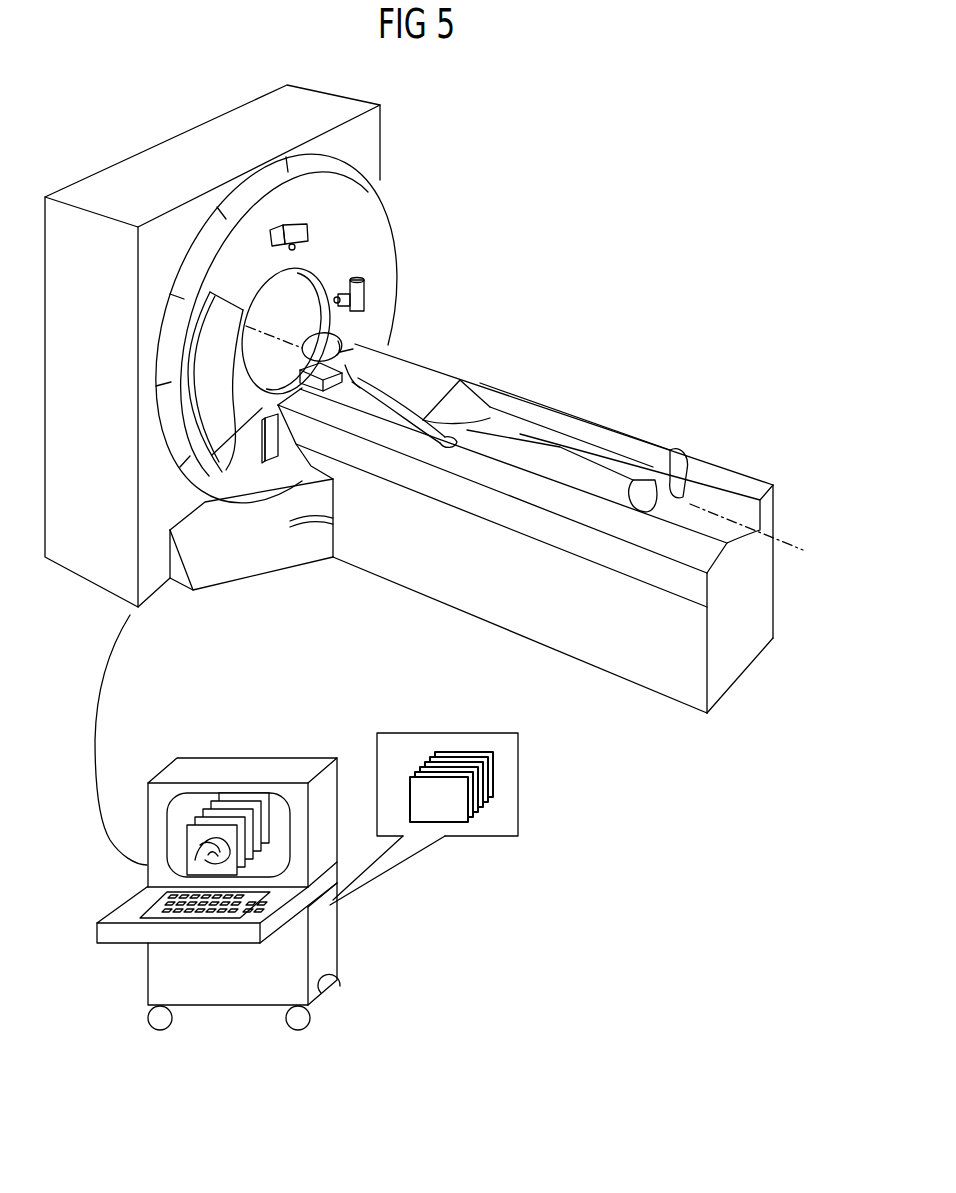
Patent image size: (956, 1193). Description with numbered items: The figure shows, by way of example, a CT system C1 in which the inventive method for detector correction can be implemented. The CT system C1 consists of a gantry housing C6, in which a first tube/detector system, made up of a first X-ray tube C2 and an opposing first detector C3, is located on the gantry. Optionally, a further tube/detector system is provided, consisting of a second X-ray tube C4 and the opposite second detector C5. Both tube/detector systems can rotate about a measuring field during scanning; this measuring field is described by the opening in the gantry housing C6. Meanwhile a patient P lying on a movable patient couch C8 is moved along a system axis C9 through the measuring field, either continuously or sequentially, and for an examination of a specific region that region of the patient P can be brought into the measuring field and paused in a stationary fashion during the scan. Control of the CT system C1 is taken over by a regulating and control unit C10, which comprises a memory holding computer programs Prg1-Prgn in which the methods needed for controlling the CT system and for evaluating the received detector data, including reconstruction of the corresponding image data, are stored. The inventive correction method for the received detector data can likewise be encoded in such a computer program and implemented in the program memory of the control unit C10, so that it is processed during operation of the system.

The CT system C1 is at (557, 263).
The first X-ray tube C2 is at (310, 227).
The first detector C3 is at (275, 445).
The second X-ray tube C4 is at (364, 297).
The second detector C5 is at (220, 447).
The gantry housing C6 is at (73, 546).
The patient couch C8 is at (663, 677).
The system axis C9 is at (797, 545).
The regulating and control unit C10 is at (323, 953).
The patient P is at (397, 362).
The computer programs Prg1-Prgn is at (478, 872).